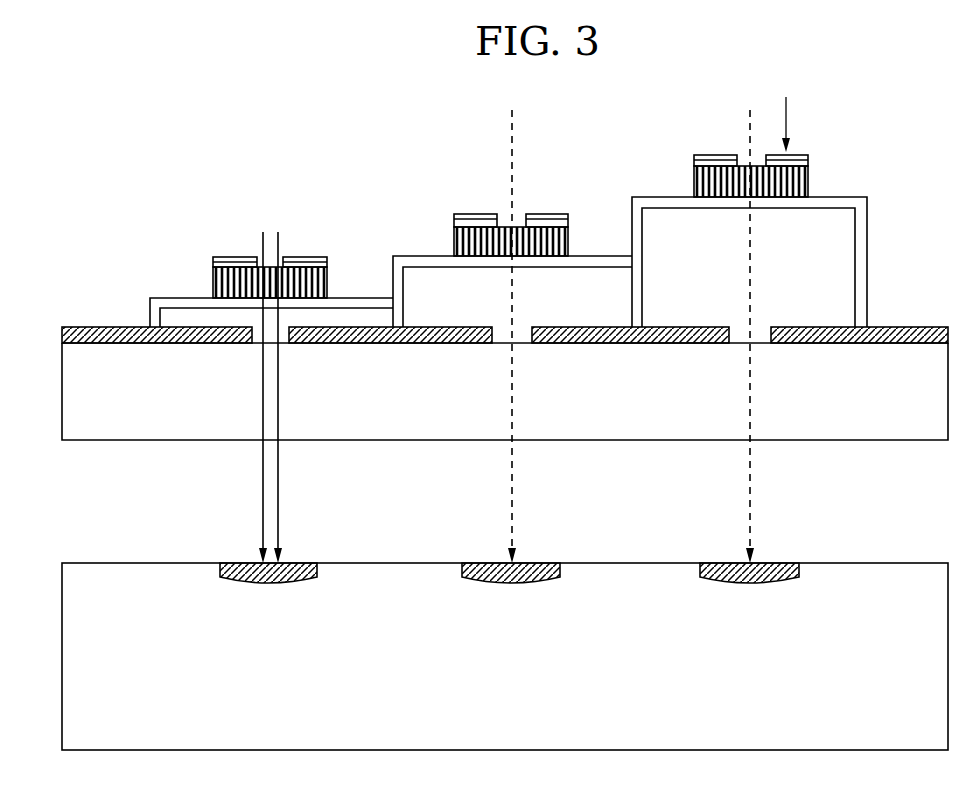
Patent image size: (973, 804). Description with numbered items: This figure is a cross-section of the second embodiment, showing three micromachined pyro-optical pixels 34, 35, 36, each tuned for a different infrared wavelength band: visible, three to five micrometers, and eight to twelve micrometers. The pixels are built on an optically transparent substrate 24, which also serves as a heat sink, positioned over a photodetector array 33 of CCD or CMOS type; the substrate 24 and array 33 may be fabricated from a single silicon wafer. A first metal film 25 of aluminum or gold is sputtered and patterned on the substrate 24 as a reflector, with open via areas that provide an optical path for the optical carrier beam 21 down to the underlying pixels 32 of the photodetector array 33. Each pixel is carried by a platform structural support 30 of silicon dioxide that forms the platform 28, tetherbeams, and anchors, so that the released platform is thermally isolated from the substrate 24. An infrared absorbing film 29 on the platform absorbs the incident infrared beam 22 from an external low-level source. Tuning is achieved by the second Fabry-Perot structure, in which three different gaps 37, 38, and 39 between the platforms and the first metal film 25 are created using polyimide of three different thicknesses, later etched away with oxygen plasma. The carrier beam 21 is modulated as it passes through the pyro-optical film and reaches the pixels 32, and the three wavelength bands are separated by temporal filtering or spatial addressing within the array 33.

The optical carrier beam 21 is at (506, 320).
The infrared beam 22 is at (547, 202).
The substrate 24 is at (865, 440).
The first metal film 25 is at (112, 326).
The platform 28 is at (213, 283).
The infrared absorbing film 29 is at (803, 155).
The platform structural support 30 is at (867, 230).
The photodetector pixel 32 is at (240, 585).
The photodetector array 33 is at (877, 750).
The first pixel 34 is at (162, 297).
The second pixel 35 is at (410, 255).
The third pixel 36 is at (663, 195).
The first gap 37 is at (270, 330).
The second gap 38 is at (500, 330).
The third gap 39 is at (740, 332).